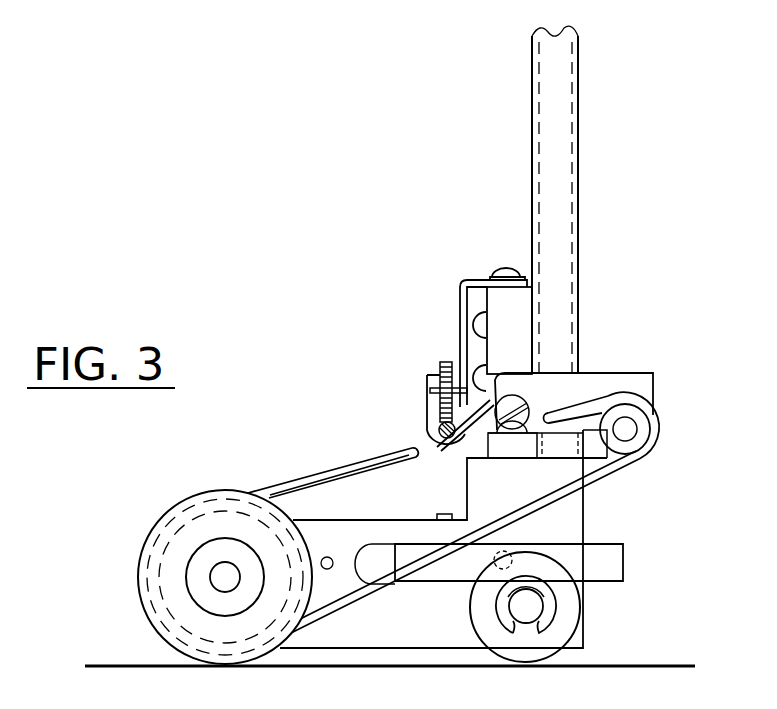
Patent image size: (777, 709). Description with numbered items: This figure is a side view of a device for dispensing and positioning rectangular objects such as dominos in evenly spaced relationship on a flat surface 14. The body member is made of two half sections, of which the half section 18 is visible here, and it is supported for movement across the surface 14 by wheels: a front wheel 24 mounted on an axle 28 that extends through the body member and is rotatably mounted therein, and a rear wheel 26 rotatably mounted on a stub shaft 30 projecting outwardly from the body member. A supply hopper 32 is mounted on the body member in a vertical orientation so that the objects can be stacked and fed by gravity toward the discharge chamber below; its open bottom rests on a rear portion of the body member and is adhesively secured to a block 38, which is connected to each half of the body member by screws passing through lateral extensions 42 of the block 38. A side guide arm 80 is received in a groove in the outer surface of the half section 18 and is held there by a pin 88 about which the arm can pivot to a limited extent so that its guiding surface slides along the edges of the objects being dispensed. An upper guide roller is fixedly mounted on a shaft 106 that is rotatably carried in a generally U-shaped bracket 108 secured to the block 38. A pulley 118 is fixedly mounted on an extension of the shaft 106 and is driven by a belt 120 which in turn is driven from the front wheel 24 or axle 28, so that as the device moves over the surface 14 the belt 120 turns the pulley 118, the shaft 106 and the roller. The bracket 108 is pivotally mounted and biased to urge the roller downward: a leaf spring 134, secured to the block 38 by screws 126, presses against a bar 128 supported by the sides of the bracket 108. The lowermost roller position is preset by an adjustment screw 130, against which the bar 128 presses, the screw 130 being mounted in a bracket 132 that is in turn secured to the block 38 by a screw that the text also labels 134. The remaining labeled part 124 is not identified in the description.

The flat surface 14 is at (135, 664).
The half section 18 is at (410, 638).
The front wheel 24 is at (157, 522).
The rear wheel 26 is at (585, 637).
The axle 28 is at (237, 565).
The stub shaft 30 is at (543, 612).
The supply hopper 32 is at (578, 207).
The block 38 is at (513, 318).
The lateral extension 42 is at (505, 450).
The arm 80 is at (608, 560).
The pin 88 is at (437, 515).
The shaft 106 is at (638, 430).
The U-shaped bracket 108 is at (628, 373).
The pulley 118 is at (650, 413).
The belt 120 is at (598, 483).
The lever 124 is at (468, 414).
The screws 126 is at (475, 375).
The bar 128 is at (435, 431).
The adjustment screw 130 is at (437, 365).
The bracket 132 is at (458, 290).
The leaf spring 134 is at (500, 268).